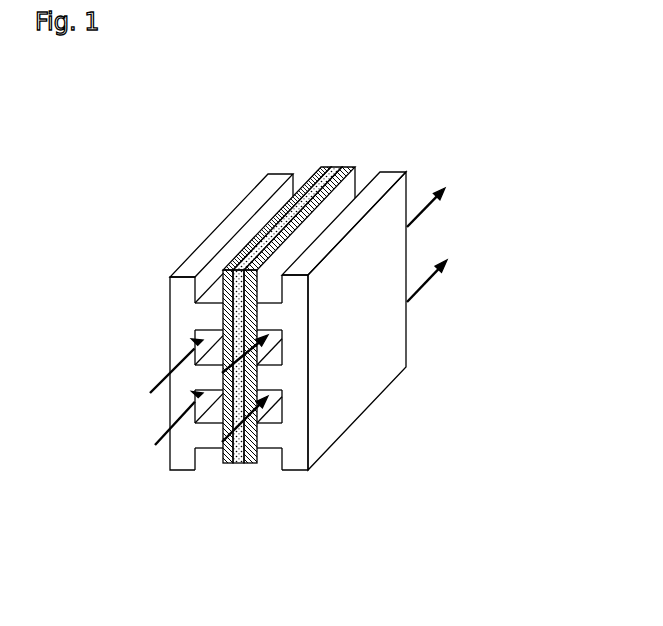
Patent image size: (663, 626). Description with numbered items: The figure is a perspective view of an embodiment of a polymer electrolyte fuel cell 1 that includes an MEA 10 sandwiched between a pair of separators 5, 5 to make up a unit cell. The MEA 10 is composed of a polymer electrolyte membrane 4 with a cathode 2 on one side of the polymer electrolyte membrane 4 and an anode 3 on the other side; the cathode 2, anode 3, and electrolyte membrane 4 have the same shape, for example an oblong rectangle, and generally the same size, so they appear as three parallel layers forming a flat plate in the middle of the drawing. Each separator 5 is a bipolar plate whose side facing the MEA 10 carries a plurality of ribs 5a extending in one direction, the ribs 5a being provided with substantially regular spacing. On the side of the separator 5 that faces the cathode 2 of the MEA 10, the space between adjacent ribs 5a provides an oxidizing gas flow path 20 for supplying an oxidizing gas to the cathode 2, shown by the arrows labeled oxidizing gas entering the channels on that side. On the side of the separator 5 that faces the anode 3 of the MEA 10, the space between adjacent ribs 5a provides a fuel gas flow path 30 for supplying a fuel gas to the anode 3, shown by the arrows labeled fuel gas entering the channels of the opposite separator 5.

The polymer electrolyte fuel cell 1 is at (470, 118).
The MEA 10 is at (373, 121).
The cathode 2 is at (346, 168).
The anode 3 is at (320, 168).
The polymer electrolyte membrane 4 is at (330, 168).
The separator 5 is at (277, 175).
The rib 5a is at (207, 318).
The oxidizing gas flow path 20 is at (279, 347).
The fuel gas flow path 30 is at (197, 333).